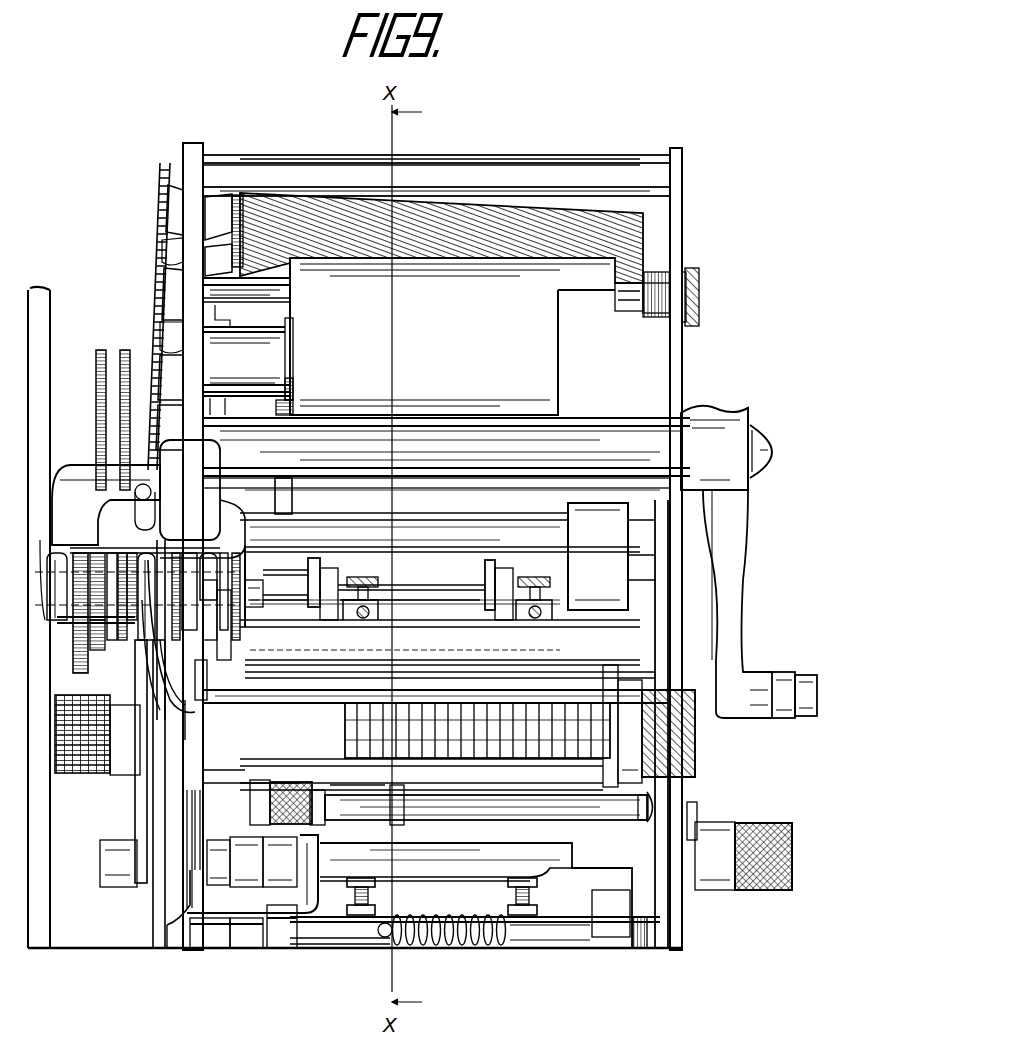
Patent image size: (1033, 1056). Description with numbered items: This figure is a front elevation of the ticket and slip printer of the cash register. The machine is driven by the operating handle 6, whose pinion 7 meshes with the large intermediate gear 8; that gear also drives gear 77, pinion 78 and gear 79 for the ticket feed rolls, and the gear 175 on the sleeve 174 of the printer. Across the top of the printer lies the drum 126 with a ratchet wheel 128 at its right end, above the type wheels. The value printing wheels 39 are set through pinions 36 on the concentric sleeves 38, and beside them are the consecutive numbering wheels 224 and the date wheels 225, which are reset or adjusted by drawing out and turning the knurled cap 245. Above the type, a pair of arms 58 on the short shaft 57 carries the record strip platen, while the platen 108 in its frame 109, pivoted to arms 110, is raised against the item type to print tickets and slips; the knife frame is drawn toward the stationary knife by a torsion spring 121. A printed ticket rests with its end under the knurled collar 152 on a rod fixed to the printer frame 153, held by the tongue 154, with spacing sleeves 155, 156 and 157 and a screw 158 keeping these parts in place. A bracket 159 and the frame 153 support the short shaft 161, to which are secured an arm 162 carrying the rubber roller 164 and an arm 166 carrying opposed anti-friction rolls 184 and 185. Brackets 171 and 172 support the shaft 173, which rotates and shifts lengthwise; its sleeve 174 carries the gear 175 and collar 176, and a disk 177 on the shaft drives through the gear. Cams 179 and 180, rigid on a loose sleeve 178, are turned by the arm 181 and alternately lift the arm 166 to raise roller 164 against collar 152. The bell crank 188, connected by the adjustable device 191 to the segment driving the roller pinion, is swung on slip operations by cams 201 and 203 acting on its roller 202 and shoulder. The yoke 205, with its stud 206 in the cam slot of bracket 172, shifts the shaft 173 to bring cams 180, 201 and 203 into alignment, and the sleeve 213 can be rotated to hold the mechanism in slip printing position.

The operating handle 6 is at (735, 612).
The pinion 7 is at (108, 438).
The large intermediate gear 8 is at (99, 350).
The pinions 36 is at (80, 773).
The concentric sleeves 38 is at (112, 773).
The value printing wheels 39 is at (348, 720).
The short shaft 57 is at (425, 585).
The arms 58 is at (310, 557).
The gear 77 is at (150, 372).
The pinion 78 is at (160, 292).
The gear 79 is at (160, 212).
The platen 108 is at (427, 840).
The frame 109 is at (477, 868).
The arms 110 is at (644, 948).
The torsion spring 121 is at (450, 945).
The drum 126 is at (430, 215).
The ratchet wheel 128 is at (660, 248).
The knurled collar 152 is at (272, 788).
The printer frame 153 is at (160, 912).
The tongue 154 is at (398, 822).
The spacing sleeve 155 is at (238, 832).
The spacing sleeve 156 is at (320, 840).
The spacing sleeve 157 is at (512, 812).
The screw 158 is at (645, 810).
The bracket 159 is at (320, 870).
The short shaft 161 is at (165, 922).
The arm 162 is at (245, 948).
The roller 164 is at (292, 948).
The arm 166 is at (135, 823).
The bracket 171 is at (222, 452).
The bracket 172 is at (200, 395).
The shaft 173 is at (258, 618).
The sleeve 174 is at (52, 566).
The gear 175 is at (98, 655).
The collar 176 is at (92, 640).
The disk 177 is at (130, 625).
The sleeve 178 is at (148, 590).
The cam 179 is at (118, 560).
The cam 180 is at (148, 690).
The arm 181 is at (205, 470).
The anti-friction roll 184 is at (70, 625).
The anti-friction roll 185 is at (170, 705).
The bell crank 188 is at (188, 738).
The adjustable device 191 is at (240, 840).
The cam 201 is at (125, 515).
The anti-friction roller 202 is at (205, 692).
The cam 203 is at (210, 642).
The yoke 205 is at (225, 568).
The stud 206 is at (143, 484).
The sleeve 213 is at (722, 825).
The consecutive numbering wheels 224 is at (492, 693).
The date wheels 225 is at (538, 712).
The knurled cap 245 is at (680, 730).